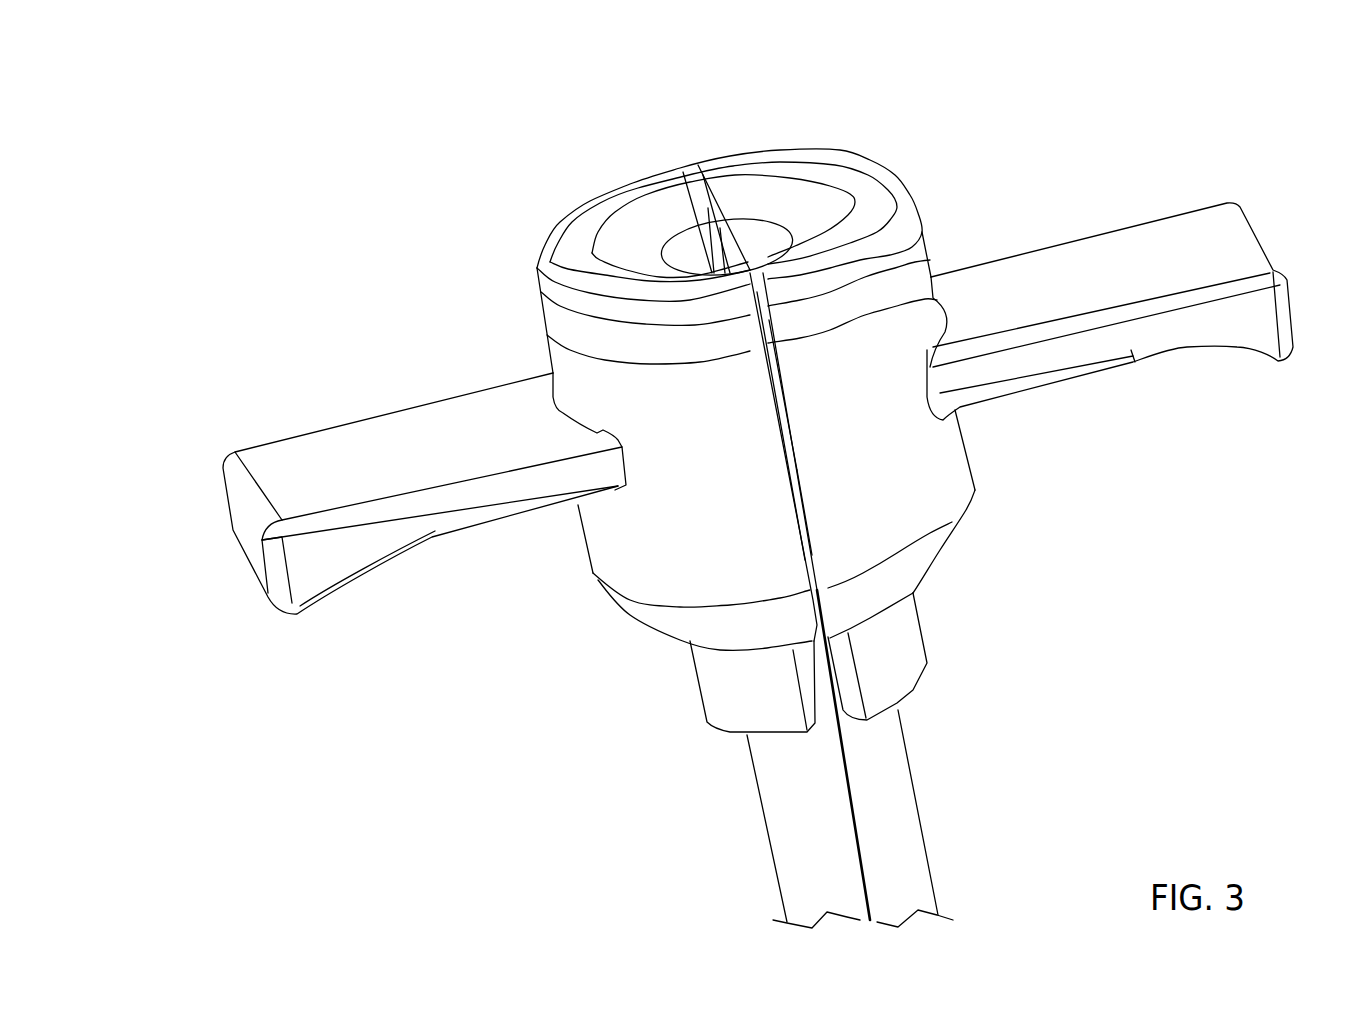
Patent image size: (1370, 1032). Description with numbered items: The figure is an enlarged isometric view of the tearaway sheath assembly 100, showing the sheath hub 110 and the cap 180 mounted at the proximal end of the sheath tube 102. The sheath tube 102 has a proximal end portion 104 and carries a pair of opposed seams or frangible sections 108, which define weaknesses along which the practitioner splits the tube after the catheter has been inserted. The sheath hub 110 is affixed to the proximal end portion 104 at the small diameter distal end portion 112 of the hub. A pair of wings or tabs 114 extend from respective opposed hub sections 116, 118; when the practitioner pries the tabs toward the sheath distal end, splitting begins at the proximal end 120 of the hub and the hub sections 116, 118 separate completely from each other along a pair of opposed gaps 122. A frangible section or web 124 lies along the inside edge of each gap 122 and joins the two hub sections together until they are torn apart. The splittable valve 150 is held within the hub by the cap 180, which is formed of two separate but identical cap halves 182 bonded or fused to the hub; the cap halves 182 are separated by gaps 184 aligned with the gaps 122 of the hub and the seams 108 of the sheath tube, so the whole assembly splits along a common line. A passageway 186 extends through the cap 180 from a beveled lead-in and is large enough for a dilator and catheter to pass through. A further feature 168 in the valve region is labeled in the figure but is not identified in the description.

The sheath assembly 100 is at (307, 300).
The sheath tube 102 is at (933, 860).
The proximal end portion 104 is at (833, 693).
The seams 108 is at (852, 803).
The sheath hub 110 is at (600, 569).
The distal end portion 112 is at (905, 637).
The wings 114 is at (1217, 228).
The hub section 116 is at (543, 351).
The hub section 118 is at (968, 432).
The proximal end 120 is at (934, 257).
The gaps 122 is at (806, 478).
The frangible section 124 is at (795, 498).
The splittable valve 150 is at (794, 416).
The blade tip 168 is at (800, 445).
The cap 180 is at (842, 148).
The cap halves 182 is at (912, 172).
The gaps 184 is at (752, 270).
The passageway 186 is at (701, 252).